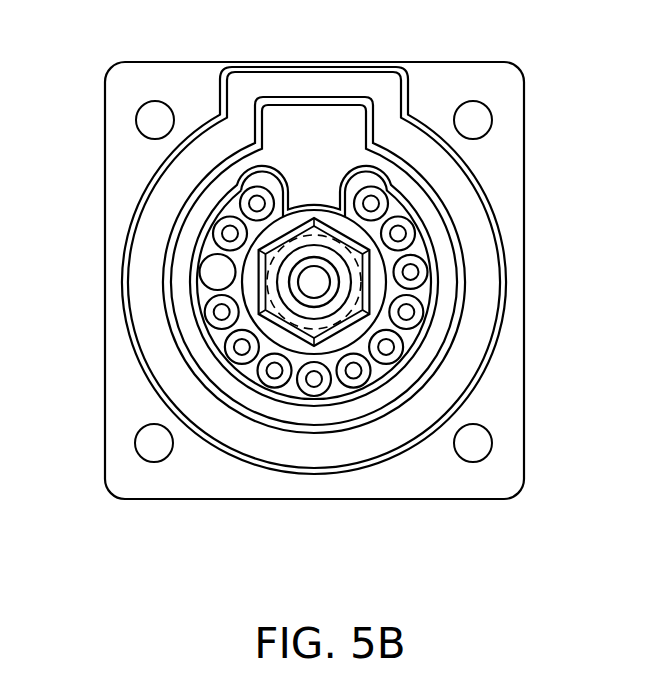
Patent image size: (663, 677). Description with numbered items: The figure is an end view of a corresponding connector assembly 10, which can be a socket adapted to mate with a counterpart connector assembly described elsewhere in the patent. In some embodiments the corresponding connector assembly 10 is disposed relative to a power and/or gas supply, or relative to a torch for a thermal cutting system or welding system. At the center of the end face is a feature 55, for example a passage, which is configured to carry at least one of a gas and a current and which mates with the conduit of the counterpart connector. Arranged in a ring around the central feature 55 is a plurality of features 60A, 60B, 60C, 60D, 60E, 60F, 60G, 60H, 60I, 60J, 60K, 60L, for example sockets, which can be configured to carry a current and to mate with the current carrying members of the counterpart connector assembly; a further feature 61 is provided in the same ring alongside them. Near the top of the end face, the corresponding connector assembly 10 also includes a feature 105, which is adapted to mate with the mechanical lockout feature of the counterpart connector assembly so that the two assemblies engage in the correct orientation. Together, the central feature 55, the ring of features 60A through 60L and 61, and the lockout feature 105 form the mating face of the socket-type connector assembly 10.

The corresponding connector assembly 10 is at (558, 518).
The feature 55 is at (286, 234).
The feature 61 is at (201, 279).
The feature 105 is at (311, 148).
The feature 60A is at (245, 191).
The feature 60B is at (213, 233).
The feature 60C is at (209, 323).
The feature 60D is at (230, 359).
The feature 60E is at (264, 384).
The feature 60F is at (318, 396).
The feature 60G is at (366, 382).
The feature 60H is at (403, 345).
The feature 60I is at (423, 310).
The feature 60J is at (428, 268).
The feature 60K is at (415, 231).
The feature 60L is at (386, 200).